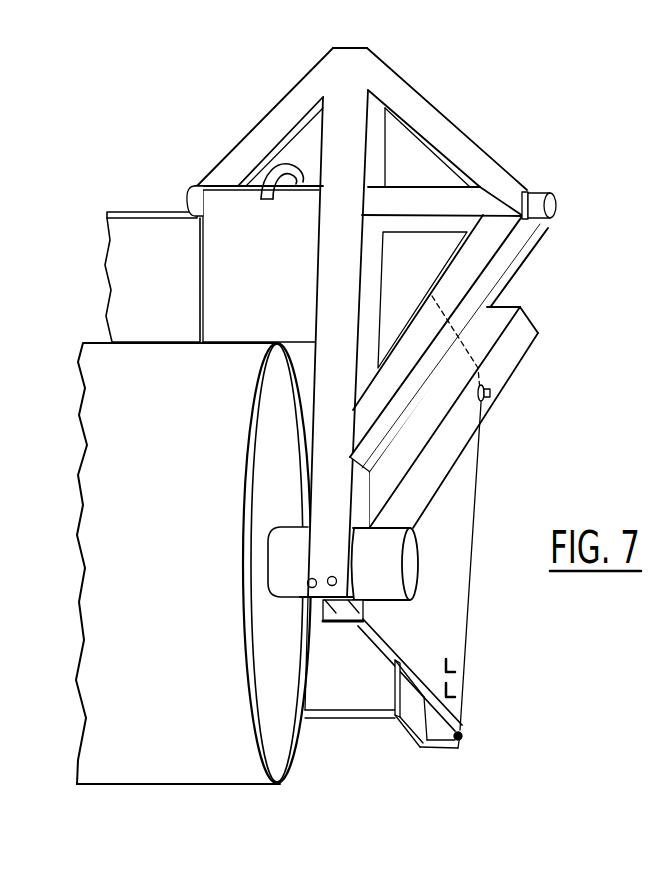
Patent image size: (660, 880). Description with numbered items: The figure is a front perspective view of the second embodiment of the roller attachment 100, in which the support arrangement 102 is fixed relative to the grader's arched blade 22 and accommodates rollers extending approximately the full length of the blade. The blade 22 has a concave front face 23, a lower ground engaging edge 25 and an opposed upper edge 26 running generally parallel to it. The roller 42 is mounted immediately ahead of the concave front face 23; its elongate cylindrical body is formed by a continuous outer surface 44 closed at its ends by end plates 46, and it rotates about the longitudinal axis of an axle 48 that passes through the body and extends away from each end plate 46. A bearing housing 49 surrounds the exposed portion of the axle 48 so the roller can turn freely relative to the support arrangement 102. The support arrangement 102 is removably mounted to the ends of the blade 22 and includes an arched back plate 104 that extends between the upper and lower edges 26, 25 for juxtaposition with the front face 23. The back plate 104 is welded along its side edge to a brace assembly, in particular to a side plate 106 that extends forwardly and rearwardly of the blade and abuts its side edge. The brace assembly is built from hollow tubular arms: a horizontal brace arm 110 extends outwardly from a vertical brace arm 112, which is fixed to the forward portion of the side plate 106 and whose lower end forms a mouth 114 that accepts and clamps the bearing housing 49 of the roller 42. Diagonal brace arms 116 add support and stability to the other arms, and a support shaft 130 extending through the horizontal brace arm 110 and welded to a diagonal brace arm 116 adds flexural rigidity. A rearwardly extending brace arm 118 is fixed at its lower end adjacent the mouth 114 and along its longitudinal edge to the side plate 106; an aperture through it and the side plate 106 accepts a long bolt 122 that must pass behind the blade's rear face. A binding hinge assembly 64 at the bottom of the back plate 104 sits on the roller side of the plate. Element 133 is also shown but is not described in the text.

The blade 22 is at (108, 194).
The concave front face 23 is at (163, 294).
The lower ground engaging edge 25 is at (327, 719).
The upper edge 26 is at (147, 210).
The roller 42 is at (168, 796).
The outer surface 44 is at (167, 580).
The end plates 46 is at (289, 668).
The axle 48 is at (421, 562).
The bearing housing 49 is at (393, 590).
The binding hinge assembly 64 is at (490, 708).
The roller attachment 100 is at (499, 778).
The support arrangement 102 is at (592, 132).
The arched back plate 104 is at (279, 277).
The side plate 106 is at (407, 297).
The horizontal brace arm 110 is at (452, 197).
The vertical brace arm 112 is at (355, 167).
The mouth 114 is at (338, 637).
The diagonal brace arms 116 is at (290, 104).
The rearwardly extending brace arm 118 is at (448, 433).
The long bolt 122 is at (490, 392).
The support shaft 130 is at (197, 196).
The hose 133 is at (272, 178).